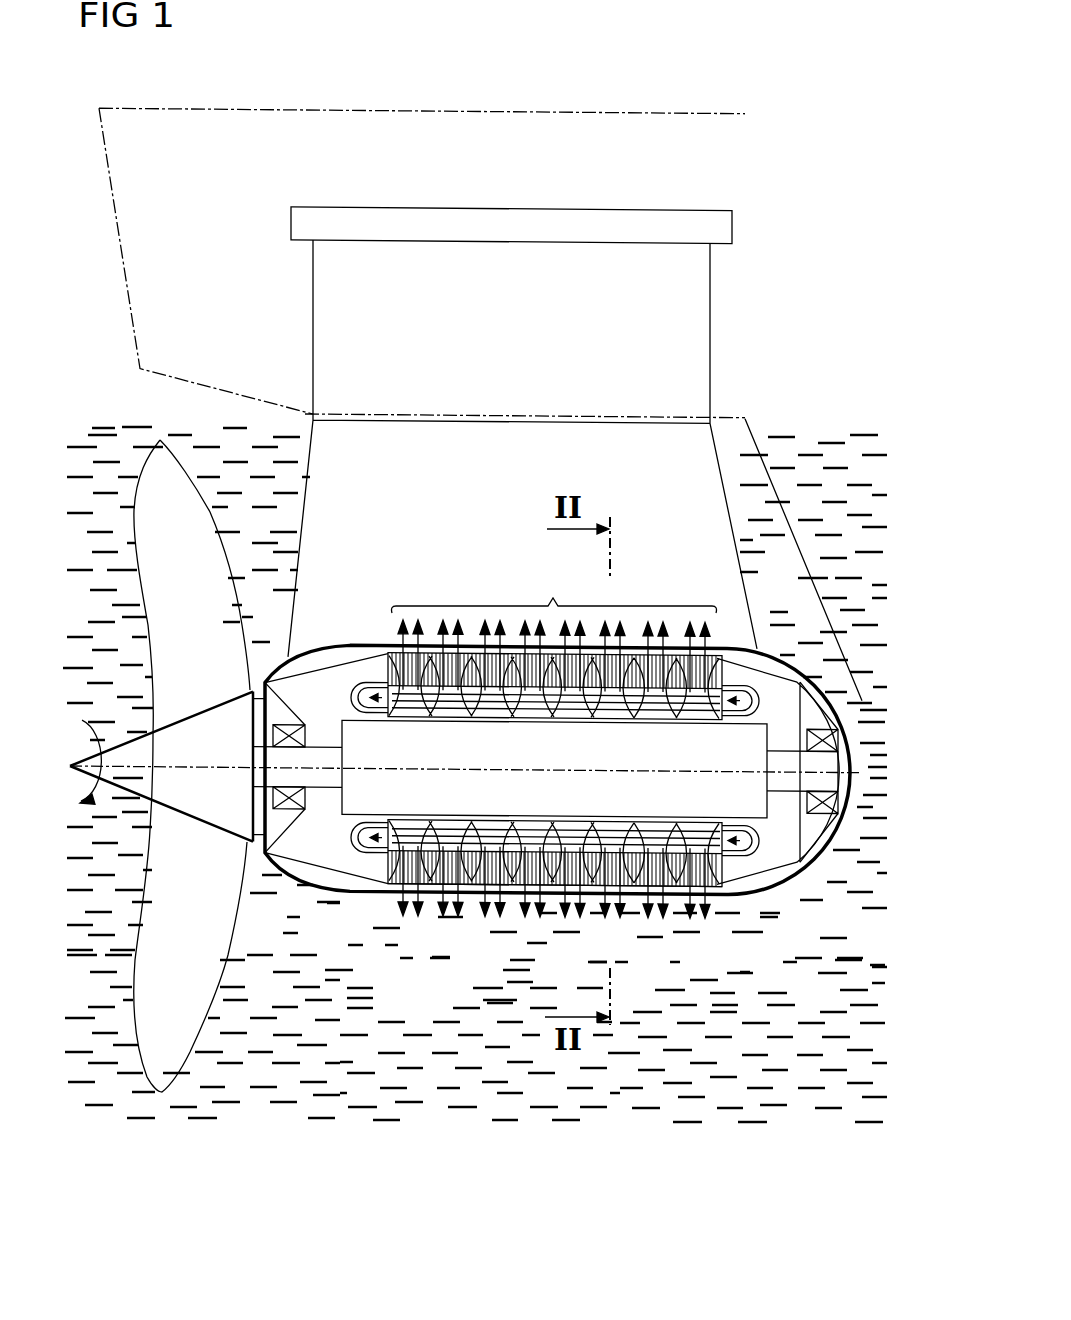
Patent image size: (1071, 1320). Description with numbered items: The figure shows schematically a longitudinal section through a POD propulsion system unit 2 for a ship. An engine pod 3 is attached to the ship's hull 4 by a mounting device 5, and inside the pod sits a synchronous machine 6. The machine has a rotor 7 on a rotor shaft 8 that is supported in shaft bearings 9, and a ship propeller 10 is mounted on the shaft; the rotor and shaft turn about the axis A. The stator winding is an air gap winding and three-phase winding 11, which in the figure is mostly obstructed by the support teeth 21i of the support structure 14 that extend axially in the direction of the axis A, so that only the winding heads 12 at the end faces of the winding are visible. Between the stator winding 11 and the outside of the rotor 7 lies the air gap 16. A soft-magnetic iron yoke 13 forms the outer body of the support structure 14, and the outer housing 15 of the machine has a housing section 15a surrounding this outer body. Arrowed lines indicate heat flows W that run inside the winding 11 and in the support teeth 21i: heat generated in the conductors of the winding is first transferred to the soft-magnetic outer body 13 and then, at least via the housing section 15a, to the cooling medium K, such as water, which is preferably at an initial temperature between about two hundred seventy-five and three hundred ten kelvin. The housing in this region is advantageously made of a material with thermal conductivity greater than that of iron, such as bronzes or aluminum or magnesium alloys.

The POD propulsion system unit 2 is at (263, 553).
The engine pod 3 is at (808, 877).
The ship's hull 4 is at (243, 108).
The mounting device 5 is at (713, 373).
The synchronous machine 6 is at (767, 833).
The rotor 7 is at (549, 804).
The rotor shaft 8 is at (312, 792).
The shaft bearings 9 is at (302, 730).
The ship propeller 10 is at (163, 1093).
The air gap winding and three-phase winding 11 is at (566, 766).
The winding heads 12 is at (373, 682).
The soft-magnetic iron yoke 13 is at (553, 903).
The support structure 14 is at (470, 650).
The outer housing 15 is at (355, 845).
The housing section 15a is at (554, 587).
The air gap 16 is at (757, 716).
The support teeth 21i is at (470, 900).
The axis A is at (372, 773).
The heat flows W is at (427, 626).
The cooling medium K is at (445, 1062).